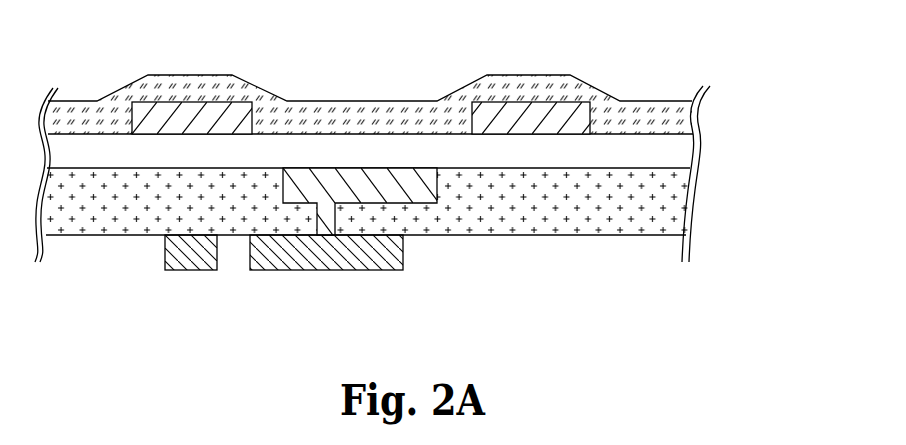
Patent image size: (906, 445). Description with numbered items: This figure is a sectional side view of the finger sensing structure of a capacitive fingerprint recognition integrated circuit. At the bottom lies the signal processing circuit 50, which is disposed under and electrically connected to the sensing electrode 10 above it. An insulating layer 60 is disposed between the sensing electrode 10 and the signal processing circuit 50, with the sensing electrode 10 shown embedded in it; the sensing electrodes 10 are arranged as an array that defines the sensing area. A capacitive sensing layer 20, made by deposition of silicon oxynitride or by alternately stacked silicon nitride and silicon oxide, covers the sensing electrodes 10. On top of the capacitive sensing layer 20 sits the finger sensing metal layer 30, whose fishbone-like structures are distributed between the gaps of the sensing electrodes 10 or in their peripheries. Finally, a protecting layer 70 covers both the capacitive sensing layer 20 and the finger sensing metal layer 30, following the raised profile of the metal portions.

The sensing electrode 10 is at (423, 195).
The capacitive sensing layer 20 is at (670, 155).
The finger sensing metal layer 30 is at (568, 113).
The signal processing circuit 50 is at (300, 258).
The insulating layer 60 is at (660, 217).
The protecting layer 70 is at (670, 117).